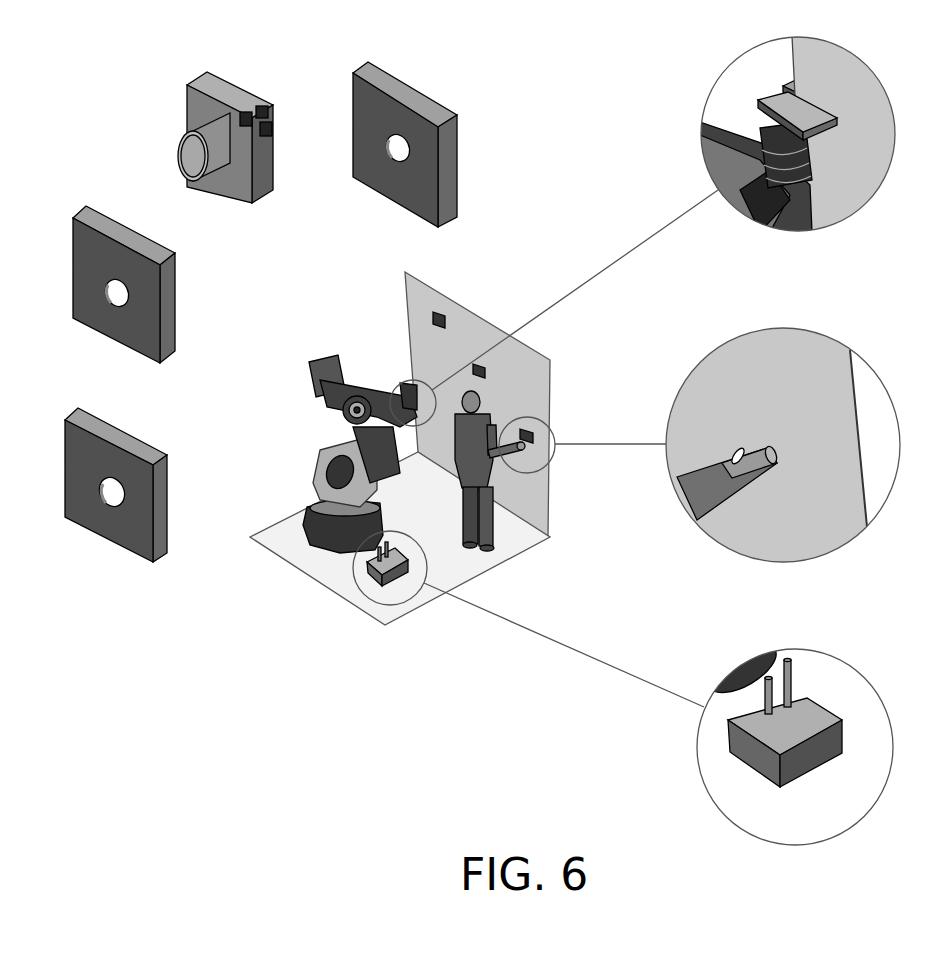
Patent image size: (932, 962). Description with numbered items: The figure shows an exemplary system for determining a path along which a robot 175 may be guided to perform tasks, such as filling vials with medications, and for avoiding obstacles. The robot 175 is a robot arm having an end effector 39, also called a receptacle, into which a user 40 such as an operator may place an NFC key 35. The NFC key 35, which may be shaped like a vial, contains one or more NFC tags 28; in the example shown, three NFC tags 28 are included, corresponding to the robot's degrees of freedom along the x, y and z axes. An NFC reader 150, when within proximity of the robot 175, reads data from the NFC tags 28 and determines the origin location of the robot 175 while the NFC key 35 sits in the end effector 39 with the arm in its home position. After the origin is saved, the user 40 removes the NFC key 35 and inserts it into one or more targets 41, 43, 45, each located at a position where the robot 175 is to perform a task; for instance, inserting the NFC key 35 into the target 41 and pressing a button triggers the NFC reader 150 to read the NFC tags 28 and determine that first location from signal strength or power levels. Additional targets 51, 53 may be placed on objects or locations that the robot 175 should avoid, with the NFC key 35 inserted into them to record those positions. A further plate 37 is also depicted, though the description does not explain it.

The NFC tag 28 is at (502, 106).
The NFC key 35 is at (455, 250).
The mounting plate 37 is at (415, 144).
The end effector 39 is at (800, 135).
The user 40 is at (501, 471).
The target 41 is at (670, 435).
The target 43 is at (521, 349).
The target 45 is at (462, 306).
The target 51 is at (124, 279).
The target 53 is at (117, 481).
The NFC reader 150 is at (617, 677).
The robot 175 is at (342, 454).